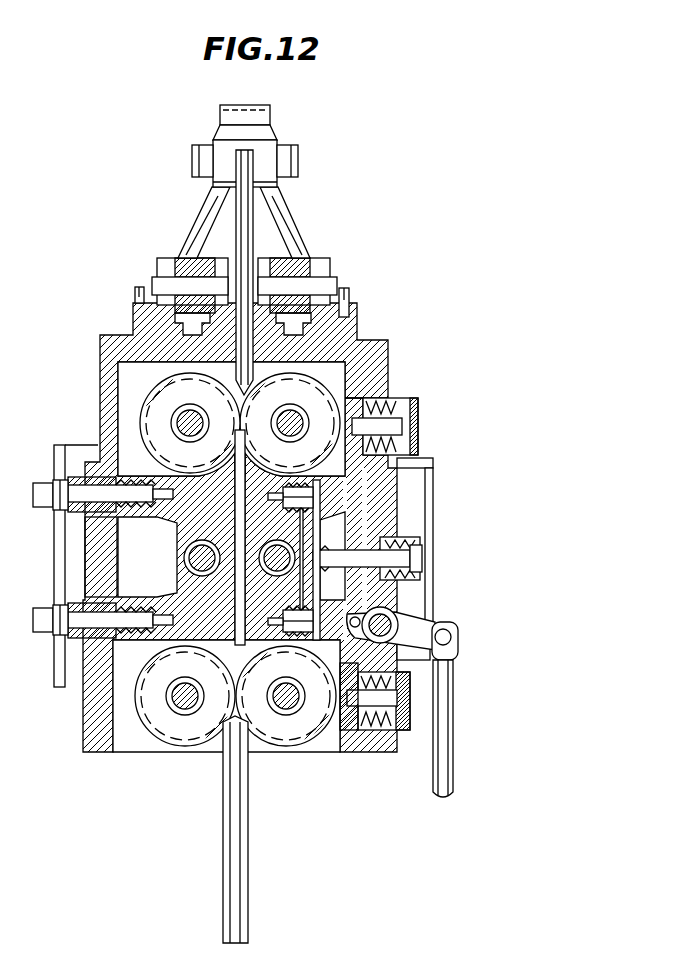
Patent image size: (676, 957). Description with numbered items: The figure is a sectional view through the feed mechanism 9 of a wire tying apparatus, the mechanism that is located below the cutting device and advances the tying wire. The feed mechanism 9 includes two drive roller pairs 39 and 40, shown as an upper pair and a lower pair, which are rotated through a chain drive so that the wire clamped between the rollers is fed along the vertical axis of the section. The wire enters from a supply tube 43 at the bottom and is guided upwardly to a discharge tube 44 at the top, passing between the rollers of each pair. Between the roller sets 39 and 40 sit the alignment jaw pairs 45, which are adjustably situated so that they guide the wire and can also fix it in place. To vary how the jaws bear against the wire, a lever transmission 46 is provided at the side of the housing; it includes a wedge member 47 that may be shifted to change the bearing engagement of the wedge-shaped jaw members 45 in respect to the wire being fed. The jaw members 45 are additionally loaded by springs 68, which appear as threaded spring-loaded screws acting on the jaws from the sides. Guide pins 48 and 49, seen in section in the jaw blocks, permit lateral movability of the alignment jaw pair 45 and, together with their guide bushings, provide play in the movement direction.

The feed mechanism 9 is at (388, 310).
The drive roller pair 39 is at (298, 395).
The drive roller pair 40 is at (176, 738).
The supply tube 43 is at (224, 872).
The discharge tube 44 is at (253, 203).
The alignment jaw pair 45 is at (366, 513).
The lever transmission 46 is at (425, 626).
The wedge member 47 is at (395, 490).
The guide pin 48 is at (201, 578).
The guide pin 49 is at (276, 541).
The spring 68 is at (138, 478).